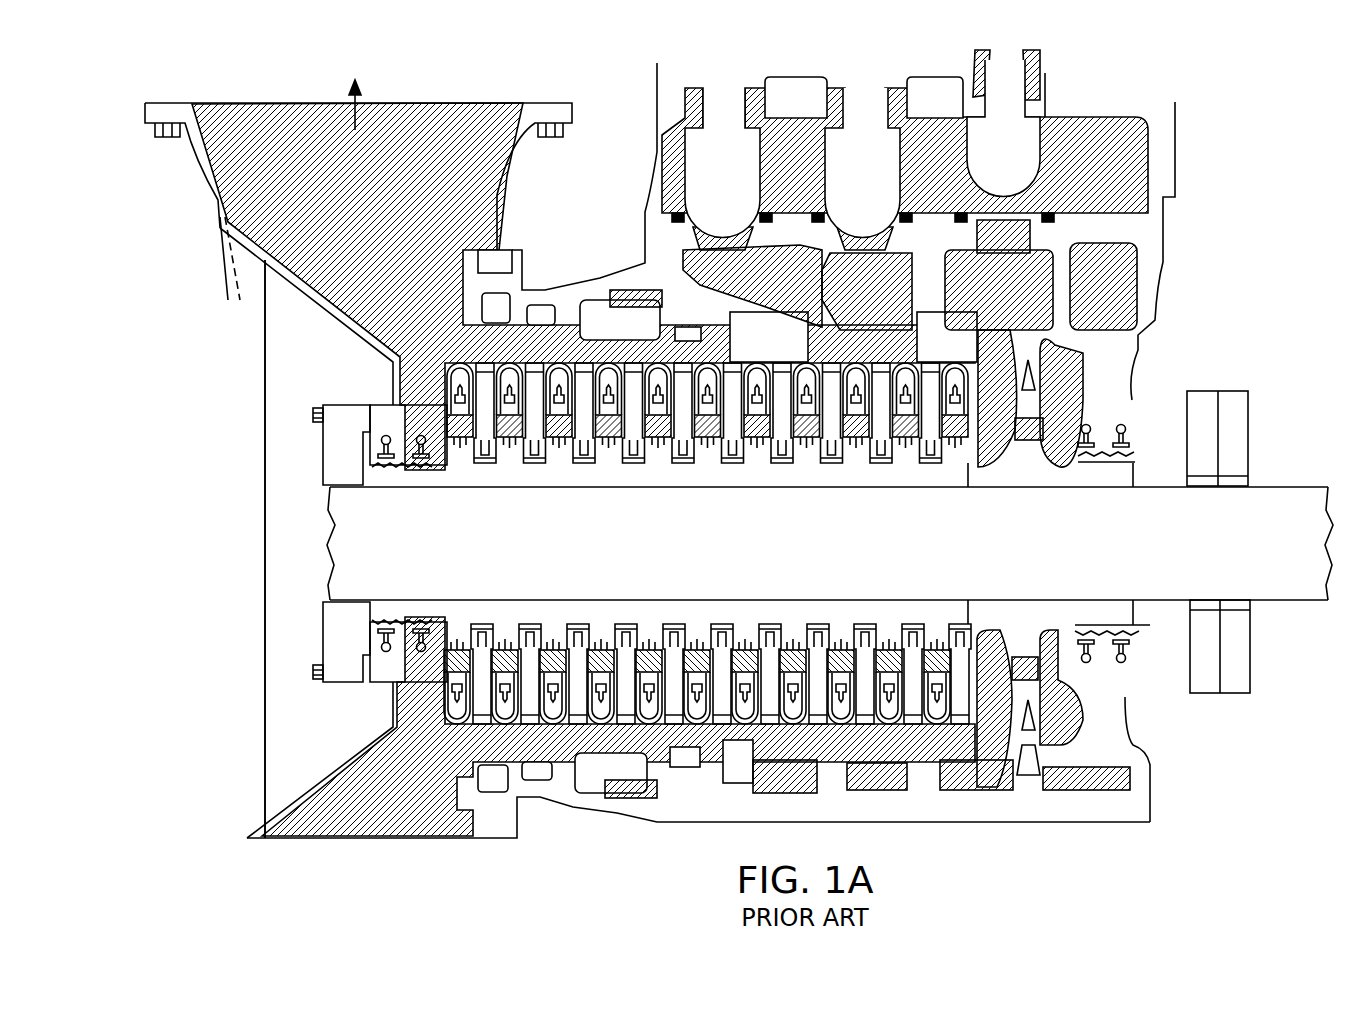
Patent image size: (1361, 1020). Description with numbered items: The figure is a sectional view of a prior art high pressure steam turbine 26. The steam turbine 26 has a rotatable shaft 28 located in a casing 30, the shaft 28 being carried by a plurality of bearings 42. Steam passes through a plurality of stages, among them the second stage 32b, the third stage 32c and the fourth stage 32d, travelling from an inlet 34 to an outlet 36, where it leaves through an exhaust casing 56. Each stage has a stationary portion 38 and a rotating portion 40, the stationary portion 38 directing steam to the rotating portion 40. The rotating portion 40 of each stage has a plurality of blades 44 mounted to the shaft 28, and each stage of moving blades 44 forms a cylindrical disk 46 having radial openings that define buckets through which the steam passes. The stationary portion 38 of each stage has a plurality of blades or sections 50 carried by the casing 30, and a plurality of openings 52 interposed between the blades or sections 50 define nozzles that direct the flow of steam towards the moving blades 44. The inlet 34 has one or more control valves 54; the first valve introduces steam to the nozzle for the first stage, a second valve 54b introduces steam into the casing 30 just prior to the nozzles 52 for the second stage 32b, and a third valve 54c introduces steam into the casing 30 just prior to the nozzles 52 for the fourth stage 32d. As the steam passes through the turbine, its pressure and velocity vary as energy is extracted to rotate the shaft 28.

The steam turbine 26 is at (210, 472).
The rotatable shaft 28 is at (408, 554).
The casing 30 is at (654, 815).
The second stage 32b is at (905, 468).
The third stage 32c is at (868, 618).
The fourth stage 32d is at (818, 468).
The inlet 34 is at (1150, 165).
The outlet 36 is at (408, 104).
The stationary portion 38 is at (958, 713).
The rotating portion 40 is at (938, 713).
The bearings 42 is at (1232, 478).
The blades 44 is at (900, 747).
The cylindrical disk 46 is at (848, 740).
The blades or sections 50 is at (962, 677).
The openings 52 is at (1060, 310).
The control valves 54 is at (706, 192).
The second valve 54b is at (982, 147).
The third valve 54c is at (840, 192).
The exhaust casing 56 is at (388, 304).